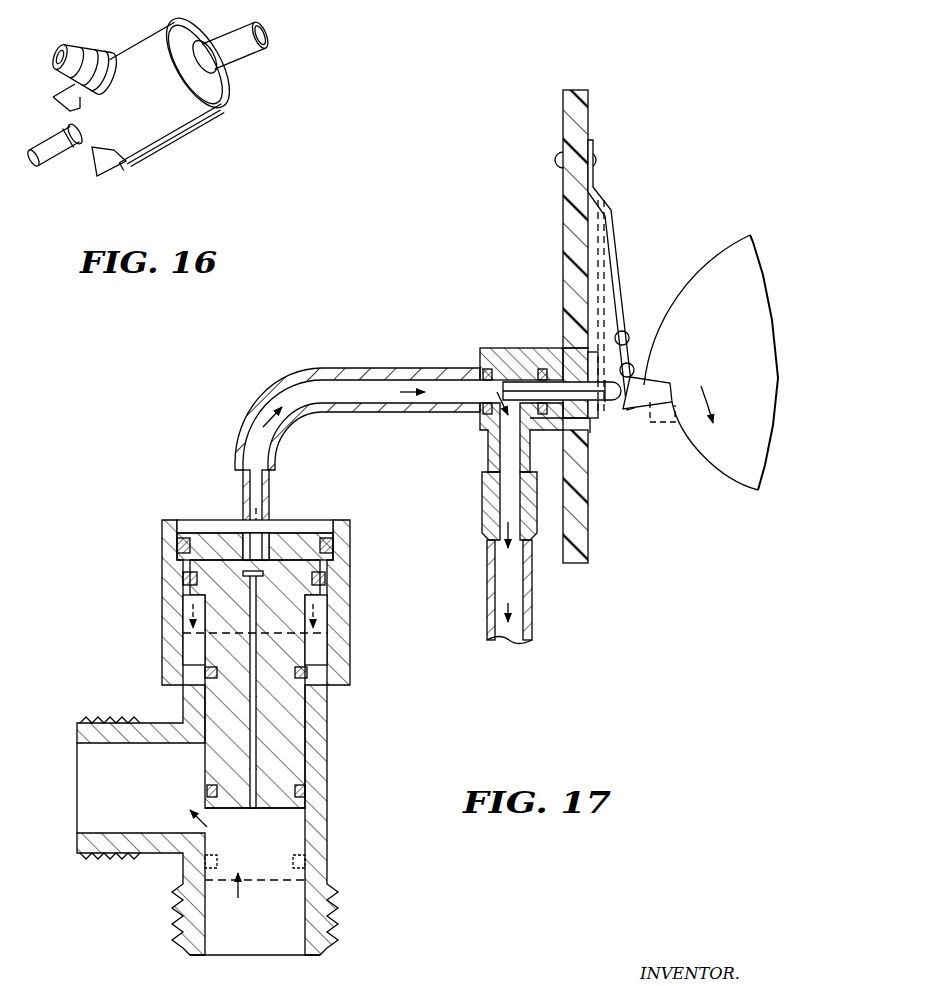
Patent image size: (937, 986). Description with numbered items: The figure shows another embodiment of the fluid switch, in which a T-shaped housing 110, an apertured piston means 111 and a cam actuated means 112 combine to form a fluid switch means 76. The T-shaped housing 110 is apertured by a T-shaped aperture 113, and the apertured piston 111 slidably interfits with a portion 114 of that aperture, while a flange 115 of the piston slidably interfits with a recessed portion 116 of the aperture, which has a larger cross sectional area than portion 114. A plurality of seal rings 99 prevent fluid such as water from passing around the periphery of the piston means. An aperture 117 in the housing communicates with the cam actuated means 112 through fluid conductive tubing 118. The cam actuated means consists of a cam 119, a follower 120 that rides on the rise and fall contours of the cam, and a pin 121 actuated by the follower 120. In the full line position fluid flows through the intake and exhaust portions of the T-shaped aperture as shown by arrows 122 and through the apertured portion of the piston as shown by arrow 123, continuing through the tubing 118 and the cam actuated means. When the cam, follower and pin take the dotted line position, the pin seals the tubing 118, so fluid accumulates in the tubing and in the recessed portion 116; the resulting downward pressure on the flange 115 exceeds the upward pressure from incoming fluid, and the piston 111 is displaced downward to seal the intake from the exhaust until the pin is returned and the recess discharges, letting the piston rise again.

In FIG. 17, the fluid switch means 76 is at (453, 683).
In FIG. 17, the seal rings 99 is at (185, 578).
In FIG. 17, the T-shaped housing 110 is at (318, 790).
In FIG. 17, the apertured piston means 111 is at (297, 762).
In FIG. 16, the cam actuated means 112 is at (180, 152).
In FIG. 17, the T-shaped aperture 113 is at (288, 938).
In FIG. 17, the portion of the T-shaped aperture 114 is at (299, 828).
In FIG. 17, the flange 115 is at (315, 596).
In FIG. 17, the recessed portion 116 is at (190, 608).
In FIG. 17, the aperture 117 is at (258, 487).
In FIG. 17, the fluid conductive tubing 118 is at (317, 374).
In FIG. 17, the cam 119 is at (743, 451).
In FIG. 17, the follower 120 is at (653, 408).
In FIG. 16, the pin 121 is at (67, 127).
In FIG. 17, the pin 121 is at (608, 405).
In FIG. 17, the arrows 122 is at (95, 792).
In FIG. 17, the arrow 123 is at (257, 664).